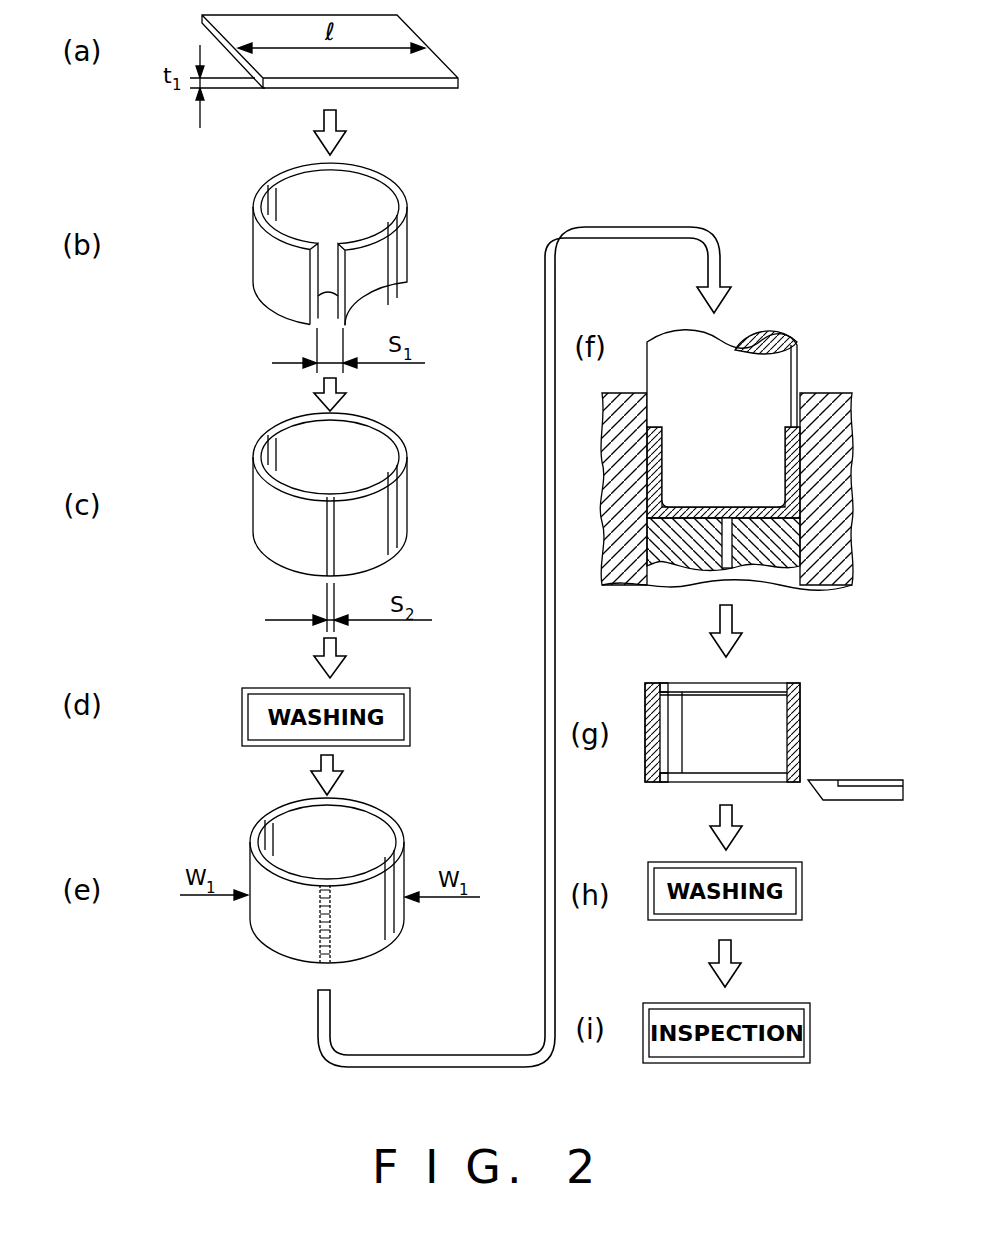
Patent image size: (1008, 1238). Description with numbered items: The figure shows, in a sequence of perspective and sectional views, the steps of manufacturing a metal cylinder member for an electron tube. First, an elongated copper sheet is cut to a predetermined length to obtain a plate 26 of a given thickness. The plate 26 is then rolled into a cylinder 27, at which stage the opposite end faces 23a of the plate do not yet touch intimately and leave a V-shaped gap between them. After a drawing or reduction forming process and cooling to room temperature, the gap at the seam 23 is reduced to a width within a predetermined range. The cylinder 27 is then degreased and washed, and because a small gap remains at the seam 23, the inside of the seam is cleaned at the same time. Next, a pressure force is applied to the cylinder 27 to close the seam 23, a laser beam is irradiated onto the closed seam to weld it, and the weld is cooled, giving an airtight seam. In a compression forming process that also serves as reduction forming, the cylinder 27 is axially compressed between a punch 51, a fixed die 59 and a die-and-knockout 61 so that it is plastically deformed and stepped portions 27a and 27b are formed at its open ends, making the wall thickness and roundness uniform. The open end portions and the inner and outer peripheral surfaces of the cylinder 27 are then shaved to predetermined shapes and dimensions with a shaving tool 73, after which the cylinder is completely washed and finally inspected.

The plate 26 is at (392, 36).
The cylinder 27 is at (395, 252).
The opposite end faces 23a is at (312, 278).
The seam 23 is at (328, 538).
The punch 51 is at (770, 330).
The fixed die 59 is at (830, 470).
The die-and-knockout 61 is at (790, 545).
The stepped portion 27a is at (664, 688).
The stepped portion 27b is at (663, 784).
The shaving tool 73 is at (883, 780).